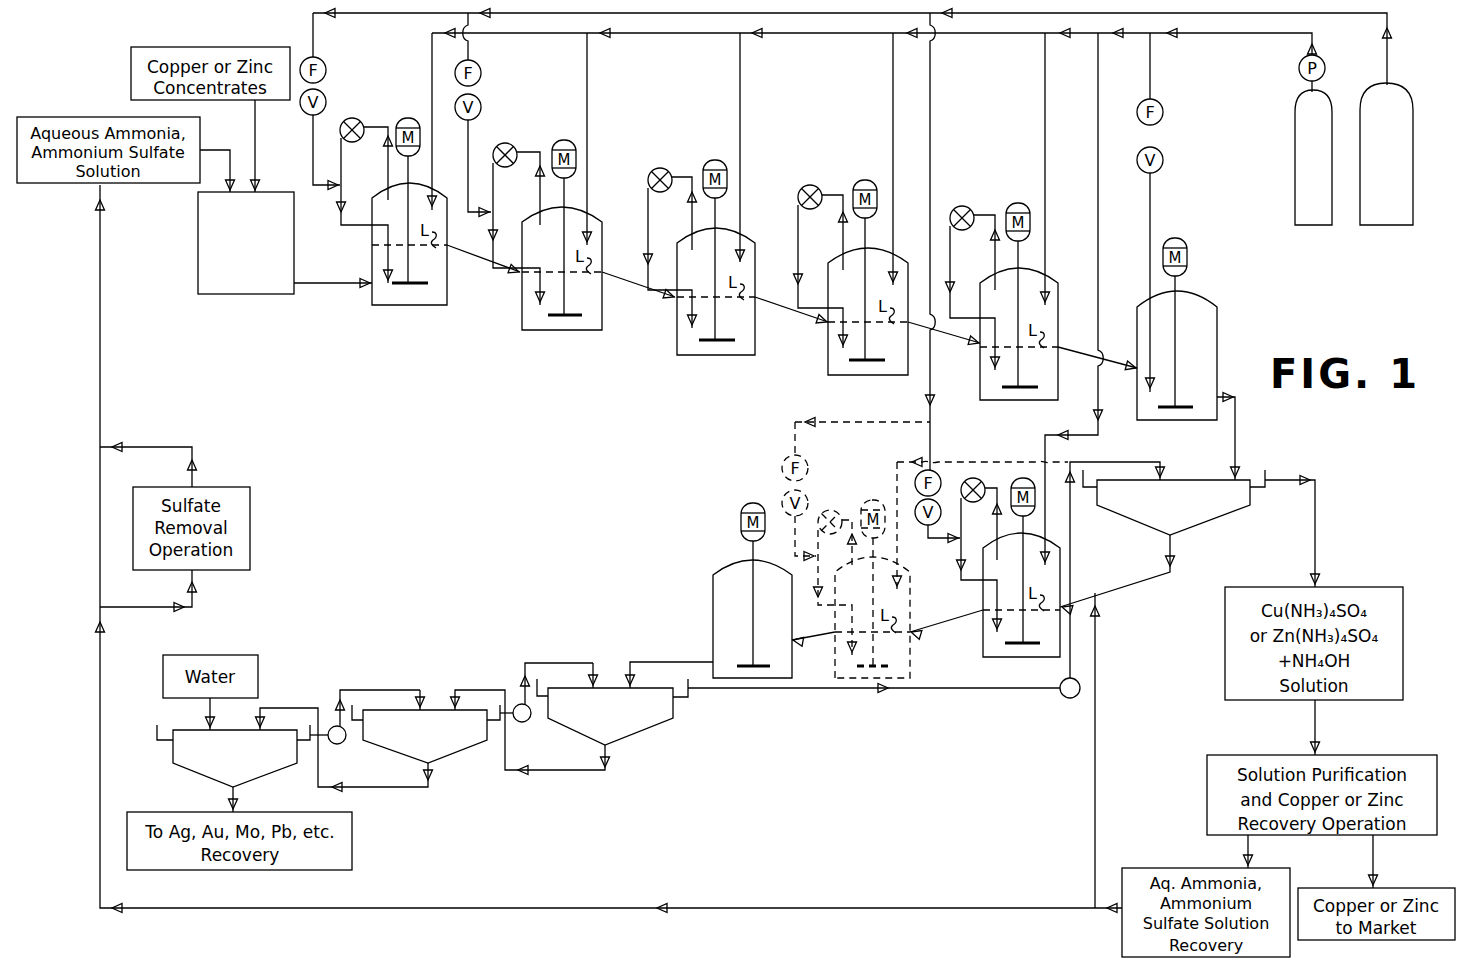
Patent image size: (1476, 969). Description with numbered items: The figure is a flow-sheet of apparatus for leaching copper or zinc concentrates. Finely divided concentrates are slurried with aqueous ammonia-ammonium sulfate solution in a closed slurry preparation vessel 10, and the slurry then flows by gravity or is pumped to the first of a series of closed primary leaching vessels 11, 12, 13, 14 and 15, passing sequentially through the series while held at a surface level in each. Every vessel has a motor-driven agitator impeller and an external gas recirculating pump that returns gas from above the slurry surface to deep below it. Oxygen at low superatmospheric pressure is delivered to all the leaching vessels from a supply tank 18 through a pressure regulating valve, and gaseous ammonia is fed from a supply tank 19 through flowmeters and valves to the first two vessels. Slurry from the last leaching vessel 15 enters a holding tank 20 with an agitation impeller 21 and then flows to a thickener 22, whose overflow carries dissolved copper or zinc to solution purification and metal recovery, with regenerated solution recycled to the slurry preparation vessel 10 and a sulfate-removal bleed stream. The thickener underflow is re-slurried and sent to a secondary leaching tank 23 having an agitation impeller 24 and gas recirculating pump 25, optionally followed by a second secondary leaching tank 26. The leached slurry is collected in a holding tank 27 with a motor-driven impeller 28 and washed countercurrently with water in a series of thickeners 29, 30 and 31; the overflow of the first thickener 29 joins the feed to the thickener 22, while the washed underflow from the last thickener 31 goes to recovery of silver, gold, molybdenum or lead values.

The slurry preparation vessel 10 is at (198, 263).
The first primary leaching vessel 11 is at (372, 267).
The second primary leaching vessel 12 is at (522, 300).
The third primary leaching vessel 13 is at (677, 325).
The fourth primary leaching vessel 14 is at (834, 353).
The fifth primary leaching vessel 15 is at (989, 380).
The oxygen supply tank 18 is at (1295, 182).
The ammonia supply tank 19 is at (1379, 191).
The holding tank 20 is at (1217, 340).
The agitation impeller 21 is at (1176, 405).
The thickener 22 is at (1188, 509).
The secondary leaching tank 23 is at (983, 645).
The agitation impeller 24 is at (1023, 651).
The gas recirculating pump 25 is at (980, 482).
The second secondary leaching tank 26 is at (835, 655).
The holding tank 27 is at (713, 611).
The impeller 28 is at (750, 666).
The first thickener 29 is at (620, 719).
The second thickener 30 is at (442, 742).
The third thickener 31 is at (247, 762).